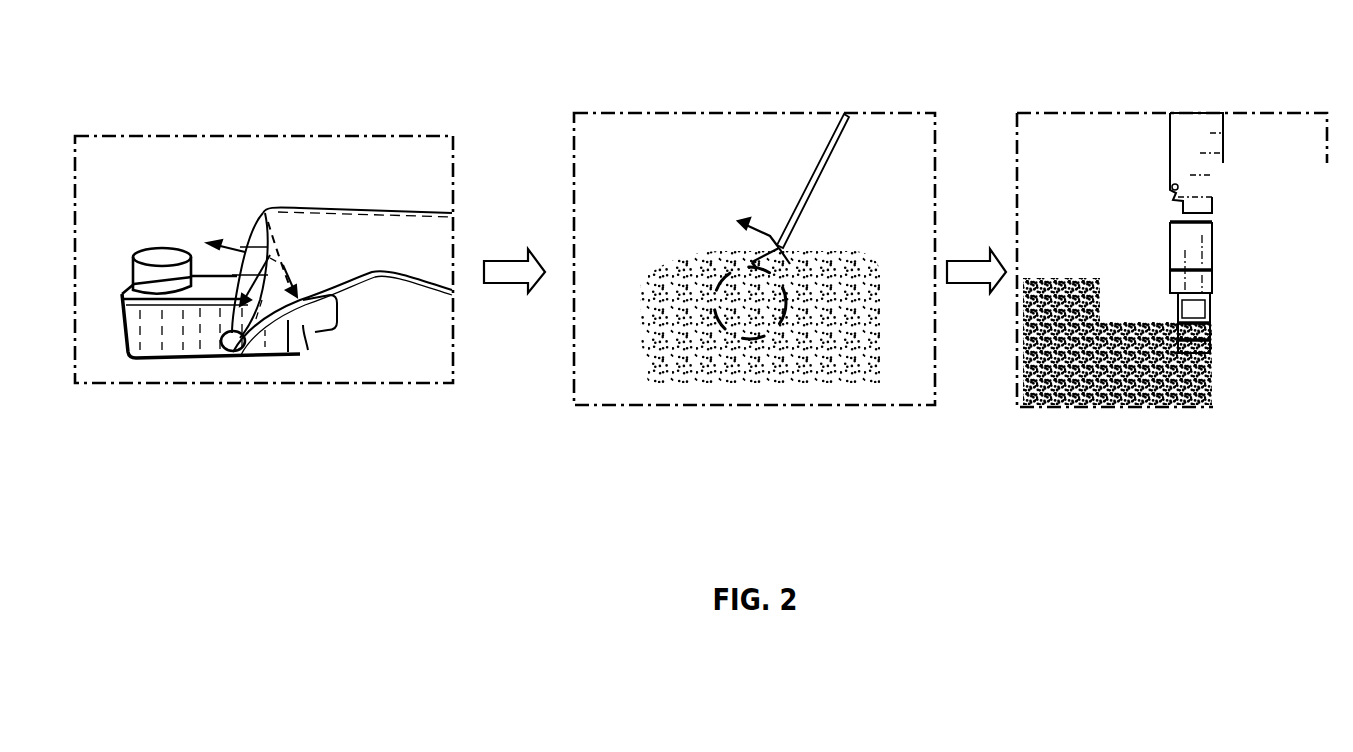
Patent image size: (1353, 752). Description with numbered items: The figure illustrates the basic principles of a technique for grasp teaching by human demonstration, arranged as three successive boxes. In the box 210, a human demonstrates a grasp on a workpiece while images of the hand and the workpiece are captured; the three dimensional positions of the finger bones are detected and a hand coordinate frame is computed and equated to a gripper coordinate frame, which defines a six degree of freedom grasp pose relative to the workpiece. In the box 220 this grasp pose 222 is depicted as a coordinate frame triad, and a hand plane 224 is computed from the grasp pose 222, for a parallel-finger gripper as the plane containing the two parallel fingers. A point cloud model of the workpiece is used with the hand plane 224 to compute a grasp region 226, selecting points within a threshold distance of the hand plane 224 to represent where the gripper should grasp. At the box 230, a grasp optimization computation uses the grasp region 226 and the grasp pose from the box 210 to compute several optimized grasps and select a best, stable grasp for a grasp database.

The box 210 is at (254, 135).
The box 220 is at (893, 113).
The grasp pose 222 is at (770, 233).
The hand plane 224 is at (828, 142).
The grasp region 226 is at (740, 350).
The box 230 is at (1123, 113).